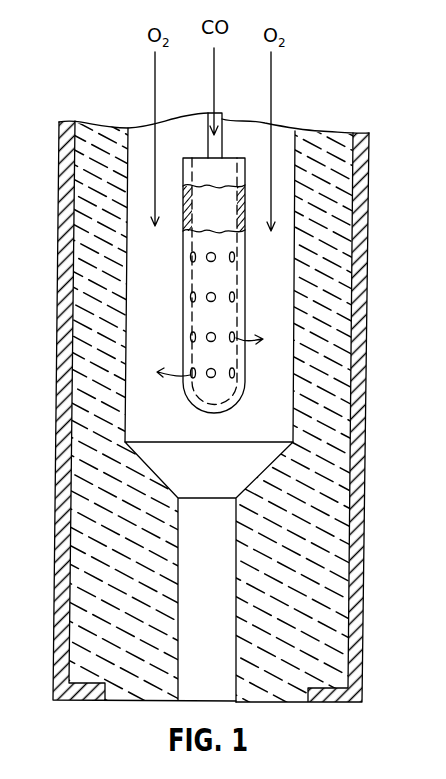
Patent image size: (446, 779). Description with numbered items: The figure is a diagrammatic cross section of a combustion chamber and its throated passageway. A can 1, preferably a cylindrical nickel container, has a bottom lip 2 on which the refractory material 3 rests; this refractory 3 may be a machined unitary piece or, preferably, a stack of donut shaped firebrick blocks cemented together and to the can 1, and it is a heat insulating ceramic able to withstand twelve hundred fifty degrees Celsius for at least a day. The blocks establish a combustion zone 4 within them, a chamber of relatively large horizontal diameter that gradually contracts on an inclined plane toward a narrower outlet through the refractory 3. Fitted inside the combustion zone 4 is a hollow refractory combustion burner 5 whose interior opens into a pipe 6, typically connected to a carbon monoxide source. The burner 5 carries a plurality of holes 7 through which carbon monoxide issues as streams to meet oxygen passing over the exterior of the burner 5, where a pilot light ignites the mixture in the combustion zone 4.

The can 1 is at (367, 331).
The bottom lip 2 is at (77, 702).
The refractory material 3 is at (340, 424).
The combustion zone 4 is at (209, 572).
The refractory combustion burner 5 is at (246, 236).
The pipe 6 is at (222, 128).
The holes 7 is at (207, 335).